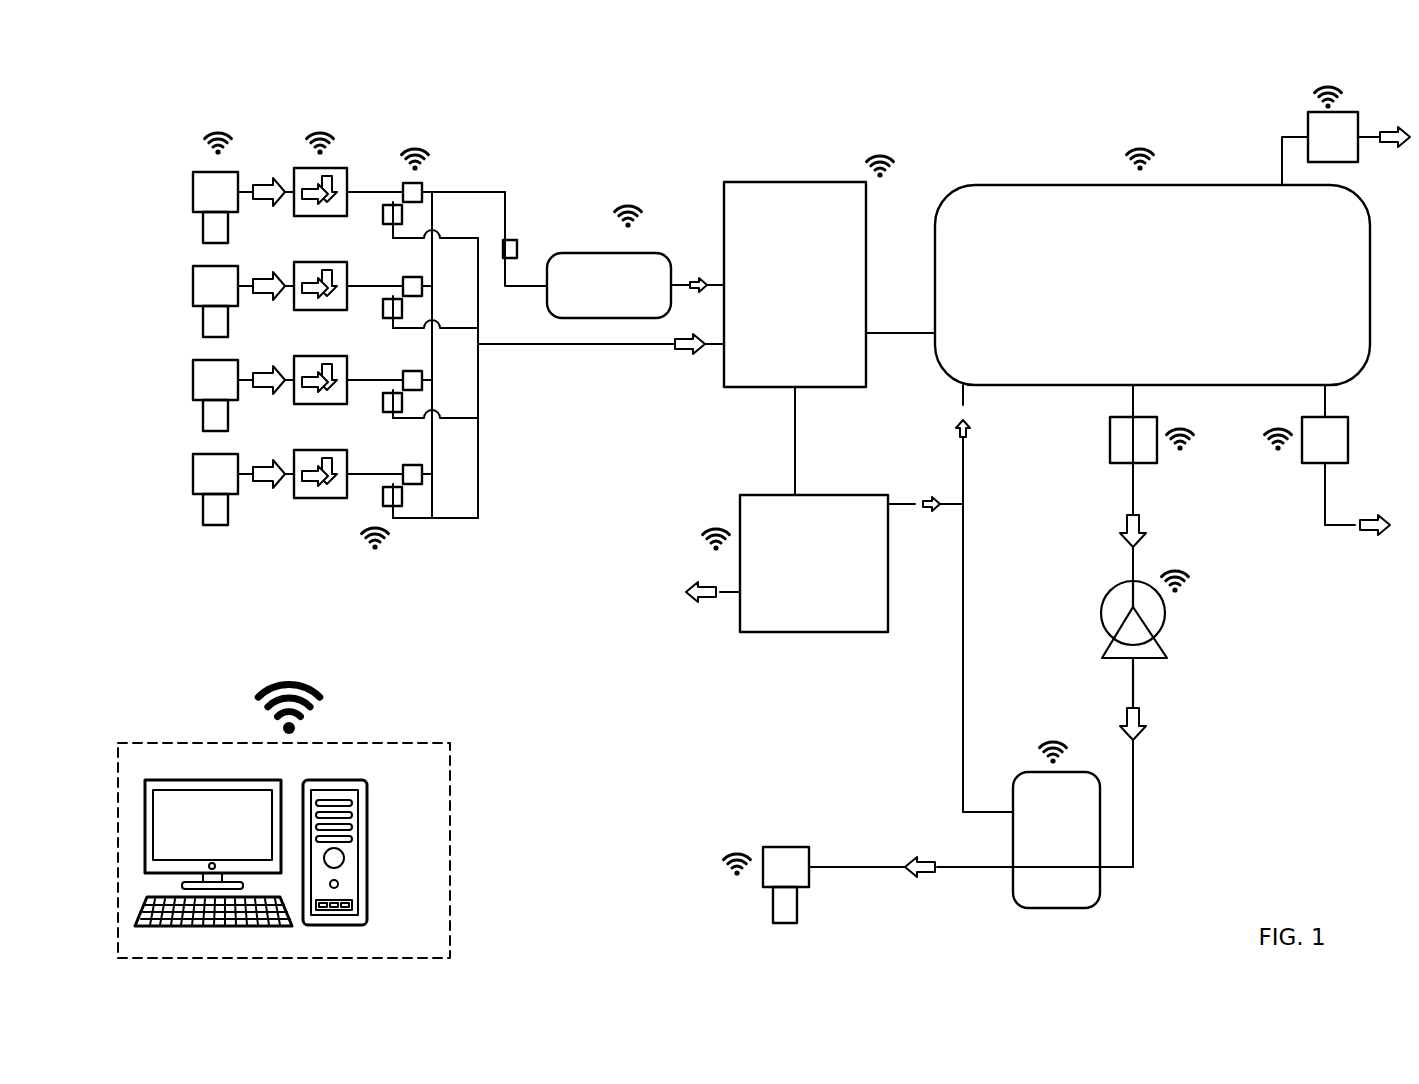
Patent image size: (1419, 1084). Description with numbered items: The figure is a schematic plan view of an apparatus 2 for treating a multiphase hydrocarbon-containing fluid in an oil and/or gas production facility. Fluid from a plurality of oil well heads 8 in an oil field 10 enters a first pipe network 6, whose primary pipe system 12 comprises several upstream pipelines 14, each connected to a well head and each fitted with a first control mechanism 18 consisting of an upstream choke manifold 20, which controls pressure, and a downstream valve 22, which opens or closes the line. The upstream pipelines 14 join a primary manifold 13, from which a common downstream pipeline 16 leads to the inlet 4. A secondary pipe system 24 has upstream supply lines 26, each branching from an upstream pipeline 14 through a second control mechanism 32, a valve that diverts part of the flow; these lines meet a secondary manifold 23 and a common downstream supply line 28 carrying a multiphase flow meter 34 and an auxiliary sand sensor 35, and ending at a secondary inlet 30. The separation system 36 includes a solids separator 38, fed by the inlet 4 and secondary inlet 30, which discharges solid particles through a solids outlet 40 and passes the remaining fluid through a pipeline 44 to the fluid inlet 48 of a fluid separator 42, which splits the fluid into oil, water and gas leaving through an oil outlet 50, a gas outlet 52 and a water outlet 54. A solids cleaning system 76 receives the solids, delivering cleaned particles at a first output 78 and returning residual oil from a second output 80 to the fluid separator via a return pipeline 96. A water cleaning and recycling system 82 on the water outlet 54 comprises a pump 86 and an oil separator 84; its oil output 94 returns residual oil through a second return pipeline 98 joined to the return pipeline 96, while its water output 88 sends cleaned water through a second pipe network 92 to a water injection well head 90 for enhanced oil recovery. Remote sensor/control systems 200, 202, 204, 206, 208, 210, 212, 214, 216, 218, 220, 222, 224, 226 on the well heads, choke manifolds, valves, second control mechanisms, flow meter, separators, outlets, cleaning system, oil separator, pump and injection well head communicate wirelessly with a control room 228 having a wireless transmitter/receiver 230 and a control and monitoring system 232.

The apparatus 2 is at (703, 127).
The inlet 4 is at (712, 346).
The first pipe network 6 is at (545, 346).
The oil well head 8 is at (193, 192).
The oil field 10 is at (744, 912).
The primary pipe system 12 is at (442, 519).
The primary manifold 13 is at (479, 457).
The upstream pipeline 14 is at (467, 237).
The common downstream pipeline 16 is at (608, 346).
The first control mechanism 18 is at (376, 121).
The upstream choke manifold 20 is at (294, 208).
The downstream valve 22 is at (383, 214).
The secondary manifold 23 is at (478, 418).
The secondary pipe system 24 is at (507, 202).
The upstream supply line 26 is at (403, 191).
The common downstream supply line 28 is at (478, 191).
The secondary inlet 30 is at (714, 284).
The second control mechanism 32 is at (422, 186).
The multiphase flow meter 34 is at (655, 253).
The auxiliary sand sensor 35 is at (517, 248).
The separation system 36 is at (1047, 124).
The solids separator 38 is at (762, 181).
The solids outlet 40 is at (888, 334).
The fluid separator 42 is at (988, 185).
The pipeline 44 is at (902, 332).
The fluid inlet 48 is at (934, 334).
The oil outlet 50 is at (1333, 400).
The gas outlet 52 is at (1282, 160).
The water outlet 54 is at (1136, 400).
The solids cleaning system 76 is at (871, 634).
The first output 78 is at (728, 594).
The second output 80 is at (900, 503).
The water cleaning and recycling system 82 is at (1168, 797).
The oil separator 84 is at (1100, 898).
The pump 86 is at (1160, 645).
The water output 88 is at (975, 869).
The water injection well head 90 is at (800, 847).
The second pipe network 92 is at (858, 869).
The oil output 94 is at (986, 811).
The return pipeline 96 is at (965, 405).
The second return pipeline 98 is at (965, 658).
The remote sensor/control system 200 is at (226, 134).
The remote sensor/control system 202 is at (328, 134).
The remote sensor/control system 204 is at (378, 552).
The remote sensor/control system 206 is at (422, 151).
The remote sensor/control system 208 is at (636, 208).
The remote sensor/control system 210 is at (888, 158).
The remote sensor/control system 212 is at (1148, 146).
The remote sensor/control system 214 is at (1276, 453).
The remote sensor/control system 216 is at (1333, 88).
The remote sensor/control system 218 is at (1182, 453).
The remote sensor/control system 220 is at (712, 530).
The remote sensor/control system 222 is at (1056, 742).
The remote sensor/control system 224 is at (1178, 570).
The remote sensor/control system 226 is at (733, 856).
The control room 228 is at (450, 743).
The wireless transmitter/receiver 230 is at (312, 690).
The control and monitoring system 232 is at (367, 790).